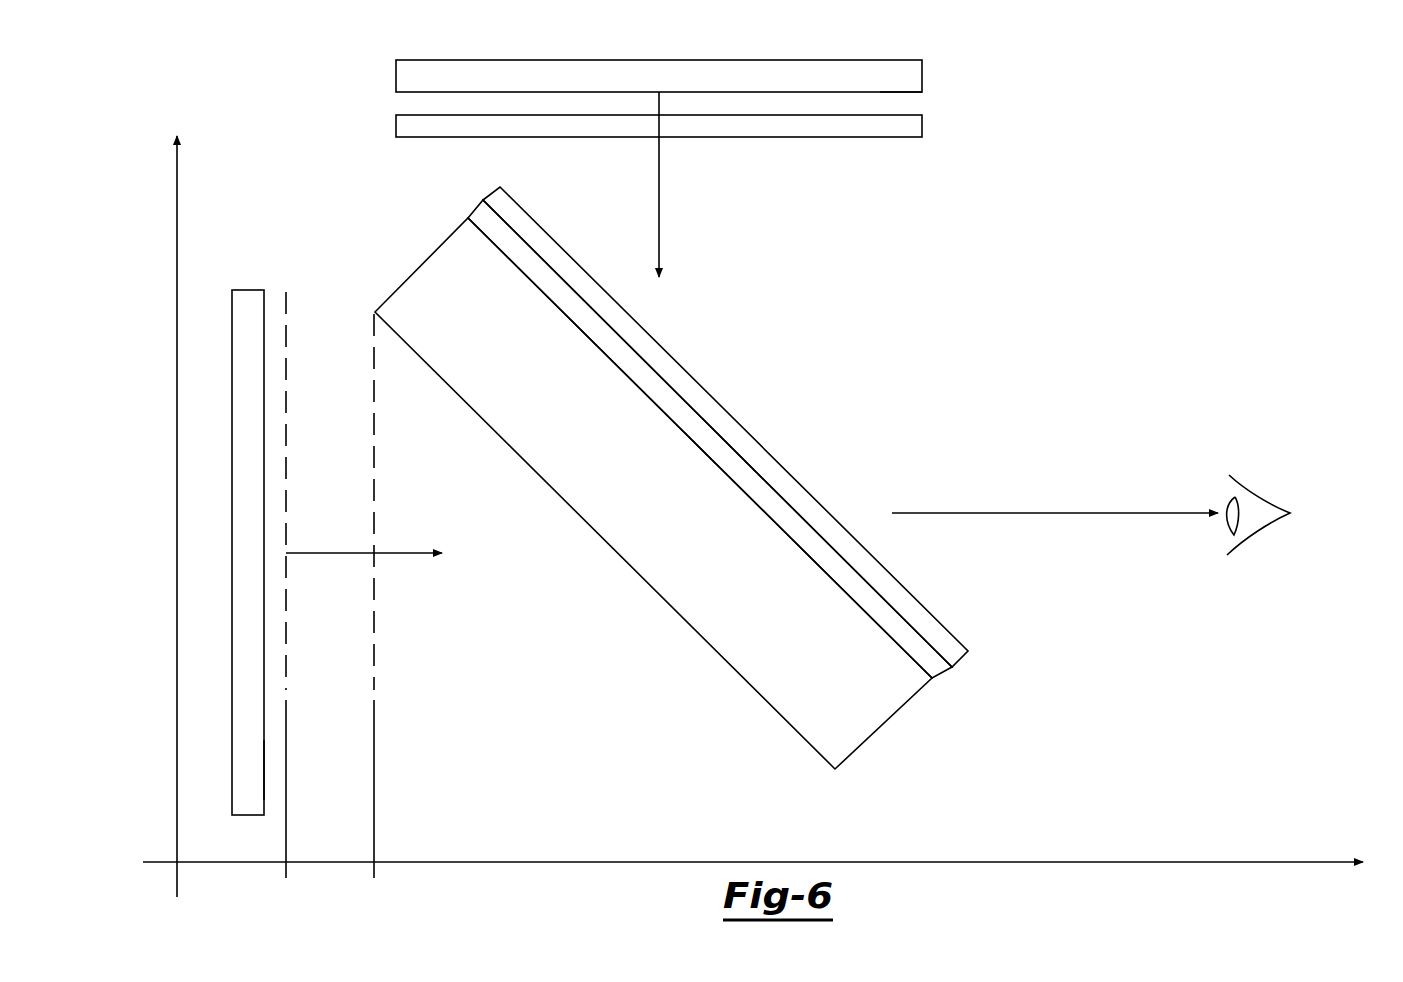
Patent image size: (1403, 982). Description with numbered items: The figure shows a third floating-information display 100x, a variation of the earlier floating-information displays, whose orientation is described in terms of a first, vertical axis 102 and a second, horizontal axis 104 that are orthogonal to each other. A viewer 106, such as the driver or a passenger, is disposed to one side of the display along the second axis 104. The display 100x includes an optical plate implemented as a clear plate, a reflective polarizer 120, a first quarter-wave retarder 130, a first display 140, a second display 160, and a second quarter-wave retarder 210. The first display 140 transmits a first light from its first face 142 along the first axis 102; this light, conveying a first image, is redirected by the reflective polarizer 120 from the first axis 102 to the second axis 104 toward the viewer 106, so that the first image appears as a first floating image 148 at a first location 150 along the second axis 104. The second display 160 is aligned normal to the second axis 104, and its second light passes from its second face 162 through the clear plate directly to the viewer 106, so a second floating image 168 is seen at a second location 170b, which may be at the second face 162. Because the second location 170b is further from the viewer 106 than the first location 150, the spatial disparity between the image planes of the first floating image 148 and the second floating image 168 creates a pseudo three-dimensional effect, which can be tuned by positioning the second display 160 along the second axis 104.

The third floating-information display 100x is at (330, 88).
The first axis 102 is at (156, 515).
The second axis 104 is at (755, 881).
The viewer 106 is at (1258, 502).
The reflective polarizer 120 is at (477, 207).
The first quarter-wave retarder 130 is at (497, 183).
The first display 140 is at (517, 60).
The first face 142 is at (910, 92).
The first floating image 148 is at (374, 642).
The first location 150 is at (375, 804).
The second display 160 is at (250, 290).
The second face 162 is at (264, 768).
The second floating image 168 is at (286, 606).
The second location 170b is at (286, 804).
The second quarter-wave retarder 210 is at (922, 126).